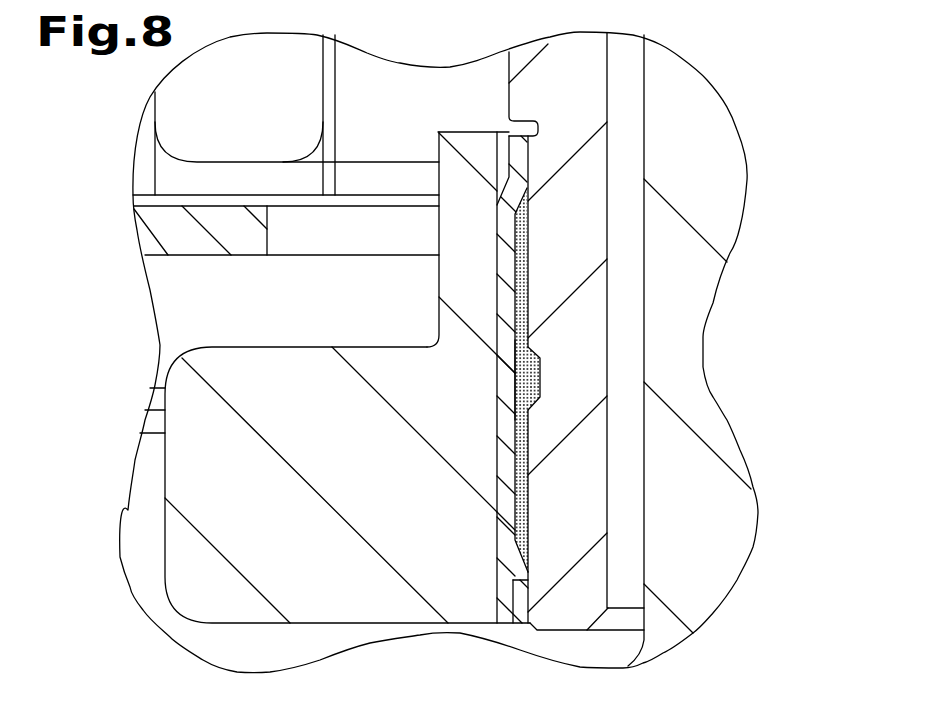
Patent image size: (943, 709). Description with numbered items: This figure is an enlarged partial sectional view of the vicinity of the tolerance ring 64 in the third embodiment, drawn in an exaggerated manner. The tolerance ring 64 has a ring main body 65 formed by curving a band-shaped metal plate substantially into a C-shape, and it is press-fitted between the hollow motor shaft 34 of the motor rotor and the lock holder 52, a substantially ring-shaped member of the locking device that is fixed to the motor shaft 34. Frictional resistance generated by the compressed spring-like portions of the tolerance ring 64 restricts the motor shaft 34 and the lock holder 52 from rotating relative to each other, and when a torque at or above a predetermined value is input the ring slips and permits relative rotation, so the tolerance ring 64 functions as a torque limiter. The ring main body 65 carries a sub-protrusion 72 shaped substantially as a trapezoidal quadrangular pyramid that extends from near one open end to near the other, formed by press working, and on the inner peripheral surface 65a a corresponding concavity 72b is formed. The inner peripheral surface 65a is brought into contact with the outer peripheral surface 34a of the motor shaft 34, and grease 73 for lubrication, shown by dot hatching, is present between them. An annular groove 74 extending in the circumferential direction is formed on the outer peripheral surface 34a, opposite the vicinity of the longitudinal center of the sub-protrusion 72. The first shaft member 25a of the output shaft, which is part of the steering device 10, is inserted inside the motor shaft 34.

The engine 10 is at (470, 352).
The first shaft member 25a is at (736, 140).
The motor shaft 34 is at (572, 620).
The outer peripheral surface of the motor shaft 34a is at (530, 508).
The lock holder 52 is at (365, 612).
The tolerance ring 64 is at (517, 135).
The ring main body 65 is at (520, 157).
The inner peripheral surface of the ring main body 65a is at (516, 623).
The sub-protrusion 72 is at (497, 246).
The concavity 72b is at (520, 390).
The grease 73 is at (527, 258).
The annular groove 74 is at (541, 377).